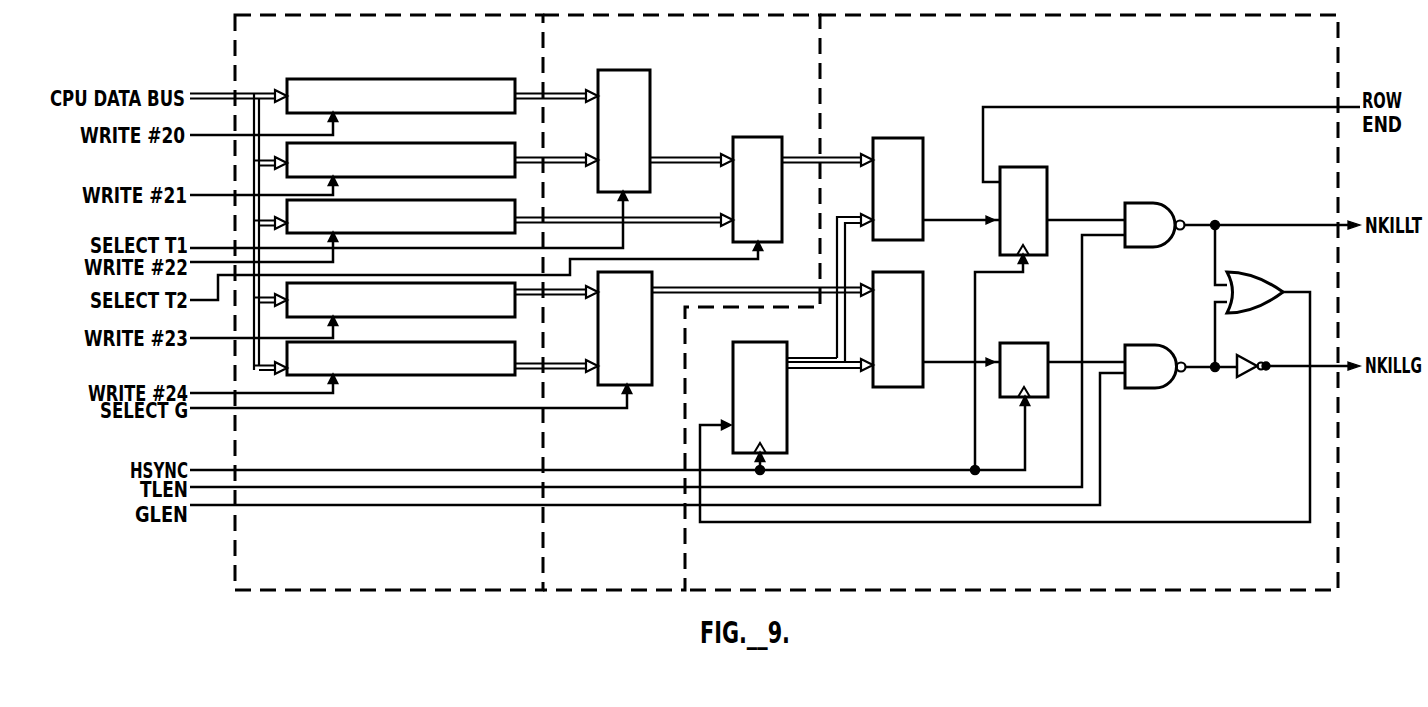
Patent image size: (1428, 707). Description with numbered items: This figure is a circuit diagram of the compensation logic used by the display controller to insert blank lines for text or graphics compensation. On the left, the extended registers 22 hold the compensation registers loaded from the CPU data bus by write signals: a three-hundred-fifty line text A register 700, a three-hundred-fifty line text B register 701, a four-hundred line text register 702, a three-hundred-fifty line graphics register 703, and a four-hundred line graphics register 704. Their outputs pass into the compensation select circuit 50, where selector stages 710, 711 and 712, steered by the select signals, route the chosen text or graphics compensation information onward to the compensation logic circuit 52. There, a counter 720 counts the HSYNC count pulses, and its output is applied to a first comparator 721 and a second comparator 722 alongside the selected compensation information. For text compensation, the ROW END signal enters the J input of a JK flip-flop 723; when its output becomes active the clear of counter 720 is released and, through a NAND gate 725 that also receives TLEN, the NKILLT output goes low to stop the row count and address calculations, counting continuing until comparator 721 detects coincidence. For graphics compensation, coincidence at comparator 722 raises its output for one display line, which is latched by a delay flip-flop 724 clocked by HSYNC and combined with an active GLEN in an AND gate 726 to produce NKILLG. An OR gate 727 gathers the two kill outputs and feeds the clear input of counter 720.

The extended registers 22 is at (529, 48).
The compensation select circuit 50 is at (808, 48).
The compensation logic circuit 52 is at (1267, 50).
The 350 lines text A register 700 is at (448, 79).
The 350 lines text B register 701 is at (500, 143).
The 400 lines text register 702 is at (500, 200).
The 350 lines graphics register 703 is at (515, 312).
The 400 lines graphics register 704 is at (434, 375).
The multiplexer 710 is at (632, 70).
The multiplexer 711 is at (768, 137).
The multiplexer 712 is at (635, 385).
The counter 720 is at (775, 342).
The comparator 721 is at (917, 138).
The comparator 722 is at (918, 272).
The JK flip-flop 723 is at (1035, 167).
The delay flip-flop 724 is at (1025, 343).
The NAND gate 725 is at (1180, 215).
The AND gate 726 is at (1170, 347).
The OR gate OR2 727 is at (1273, 276).